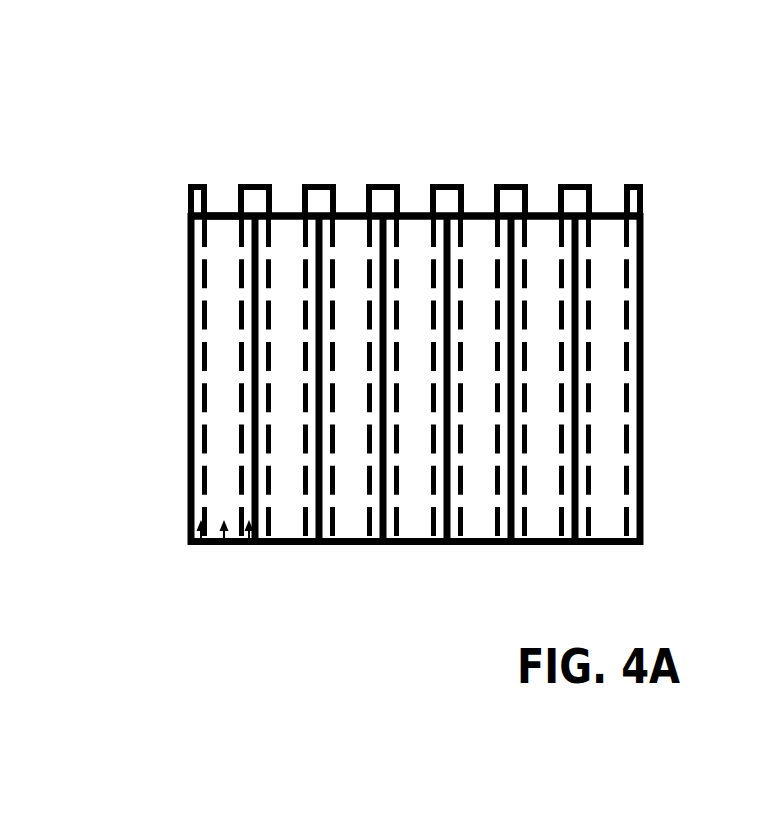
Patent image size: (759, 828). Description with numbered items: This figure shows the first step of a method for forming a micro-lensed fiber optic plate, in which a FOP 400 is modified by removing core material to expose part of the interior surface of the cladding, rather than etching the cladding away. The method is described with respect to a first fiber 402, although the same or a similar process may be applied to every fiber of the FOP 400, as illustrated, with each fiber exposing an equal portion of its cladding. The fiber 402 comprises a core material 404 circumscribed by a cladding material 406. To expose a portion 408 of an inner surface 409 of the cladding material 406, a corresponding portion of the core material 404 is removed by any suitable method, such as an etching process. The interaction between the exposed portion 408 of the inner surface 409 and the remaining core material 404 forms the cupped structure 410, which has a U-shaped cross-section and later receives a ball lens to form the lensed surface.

The FOP 400 is at (688, 298).
The first fiber 402 is at (188, 318).
The core material 404 is at (224, 545).
The cladding material 406 is at (198, 545).
The exposed portion 408 is at (185, 204).
The inner surface 409 is at (235, 193).
The cupped structure 410 is at (223, 194).